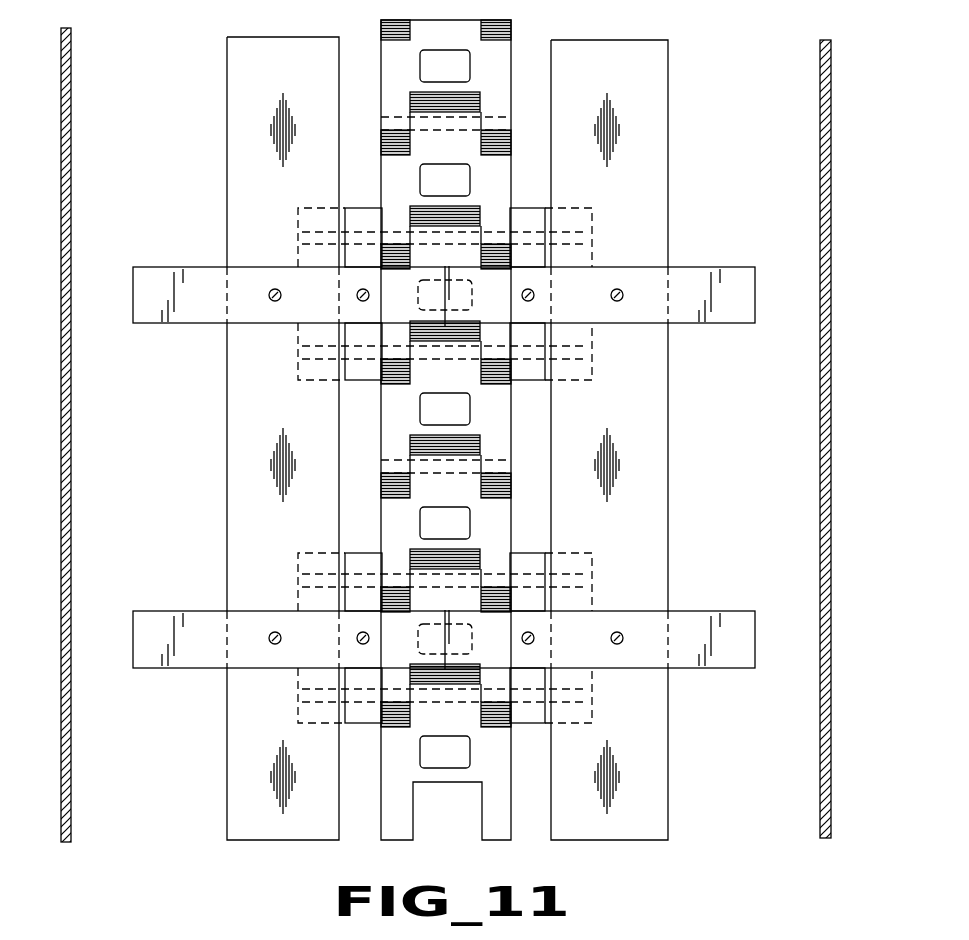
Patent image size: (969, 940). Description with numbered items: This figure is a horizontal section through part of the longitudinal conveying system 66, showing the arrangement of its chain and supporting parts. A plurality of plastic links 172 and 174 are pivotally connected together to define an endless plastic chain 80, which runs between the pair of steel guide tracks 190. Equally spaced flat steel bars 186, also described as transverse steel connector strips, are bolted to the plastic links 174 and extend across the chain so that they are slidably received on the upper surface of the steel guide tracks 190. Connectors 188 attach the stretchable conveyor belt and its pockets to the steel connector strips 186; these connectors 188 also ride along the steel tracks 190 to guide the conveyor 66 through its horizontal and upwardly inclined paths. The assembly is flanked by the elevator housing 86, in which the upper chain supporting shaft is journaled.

The conveying system 66 is at (675, 68).
The endless plastic chain 80 is at (490, 23).
The elevator housing 86 is at (72, 768).
The plastic links 172 is at (393, 74).
The plastic links 174 is at (363, 208).
The flat steel bars 186 is at (192, 320).
The connectors 188 is at (618, 289).
The steel guide tracks 190 is at (239, 116).